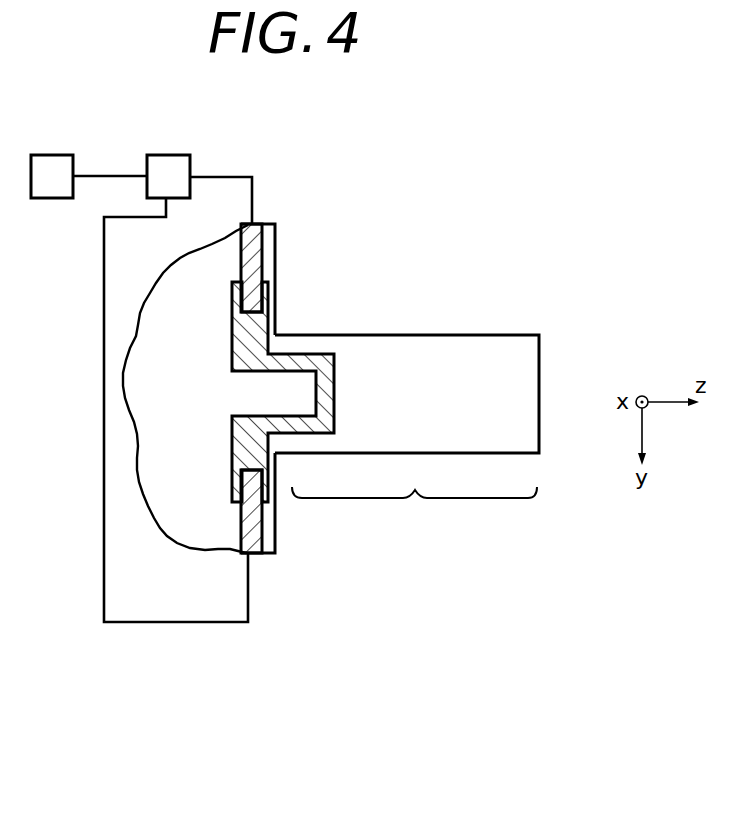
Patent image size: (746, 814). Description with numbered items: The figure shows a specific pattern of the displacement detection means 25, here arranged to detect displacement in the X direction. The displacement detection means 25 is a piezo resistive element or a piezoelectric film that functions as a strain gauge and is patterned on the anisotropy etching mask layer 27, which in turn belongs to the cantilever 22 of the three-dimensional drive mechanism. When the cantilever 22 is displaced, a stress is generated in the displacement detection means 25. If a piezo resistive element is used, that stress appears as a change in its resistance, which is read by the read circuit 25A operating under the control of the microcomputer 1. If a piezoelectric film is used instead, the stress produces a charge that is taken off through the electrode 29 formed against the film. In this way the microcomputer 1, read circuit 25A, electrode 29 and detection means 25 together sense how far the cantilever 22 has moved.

The microcomputer 1 is at (59, 155).
The read circuit 25A is at (172, 155).
The electrode 29 is at (254, 228).
The displacement detection means 25 is at (262, 319).
The anisotropy etching mask layer 27 is at (533, 358).
The cantilever 22 is at (414, 514).